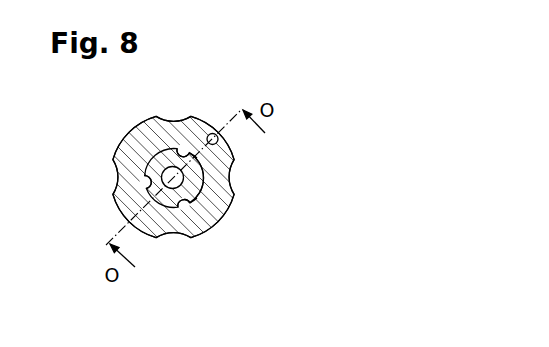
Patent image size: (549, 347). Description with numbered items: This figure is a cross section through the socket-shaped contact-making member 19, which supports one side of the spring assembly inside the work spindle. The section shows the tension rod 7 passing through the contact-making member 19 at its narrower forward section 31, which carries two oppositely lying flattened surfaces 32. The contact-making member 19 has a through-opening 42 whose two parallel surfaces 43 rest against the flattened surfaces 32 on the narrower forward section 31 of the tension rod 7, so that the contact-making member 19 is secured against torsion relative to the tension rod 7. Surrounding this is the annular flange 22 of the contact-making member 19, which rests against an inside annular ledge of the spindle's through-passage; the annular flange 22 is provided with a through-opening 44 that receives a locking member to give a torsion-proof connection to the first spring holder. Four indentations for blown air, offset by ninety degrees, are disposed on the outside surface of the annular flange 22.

The tension rod 7 is at (207, 173).
The contact-making member 19 is at (225, 222).
The annular flange 22 is at (138, 158).
The narrower forward section 31 is at (193, 188).
The flattened surfaces 32 is at (168, 151).
The through-opening 42 is at (152, 191).
The parallel surfaces 43 is at (188, 156).
The through-opening 44 is at (216, 134).